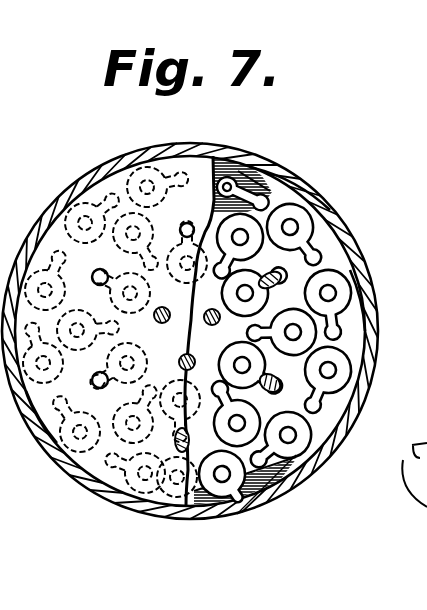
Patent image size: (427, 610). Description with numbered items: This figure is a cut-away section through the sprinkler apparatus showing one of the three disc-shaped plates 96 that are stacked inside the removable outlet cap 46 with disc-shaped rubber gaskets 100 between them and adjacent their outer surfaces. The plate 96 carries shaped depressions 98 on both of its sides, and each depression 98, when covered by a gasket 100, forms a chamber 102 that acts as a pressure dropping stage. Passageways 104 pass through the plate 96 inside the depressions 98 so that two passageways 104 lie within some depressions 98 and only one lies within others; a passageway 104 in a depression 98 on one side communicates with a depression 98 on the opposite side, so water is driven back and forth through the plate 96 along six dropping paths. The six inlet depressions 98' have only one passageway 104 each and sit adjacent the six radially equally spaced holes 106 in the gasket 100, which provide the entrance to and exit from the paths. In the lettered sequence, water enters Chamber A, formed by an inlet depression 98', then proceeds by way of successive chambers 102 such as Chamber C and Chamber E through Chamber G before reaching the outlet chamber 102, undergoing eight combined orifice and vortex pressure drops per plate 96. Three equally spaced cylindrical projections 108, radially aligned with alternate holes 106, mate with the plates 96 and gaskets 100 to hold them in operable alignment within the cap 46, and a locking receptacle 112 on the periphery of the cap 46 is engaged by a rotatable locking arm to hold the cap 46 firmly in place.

The removable outlet cap 46 is at (297, 178).
The disc-shaped plate 96 is at (352, 320).
The shaped depression 98 is at (315, 358).
The inlet depression 98' is at (293, 388).
The rubber gasket 100 is at (44, 447).
The chamber 102 is at (148, 148).
The passageway 104 is at (230, 178).
The hole 106 is at (94, 271).
The projection 108 is at (163, 306).
The locking receptacle 112 is at (410, 443).
The Chamber A is at (191, 396).
The Chamber C is at (70, 487).
The Chamber E is at (125, 517).
The Chamber G is at (237, 488).